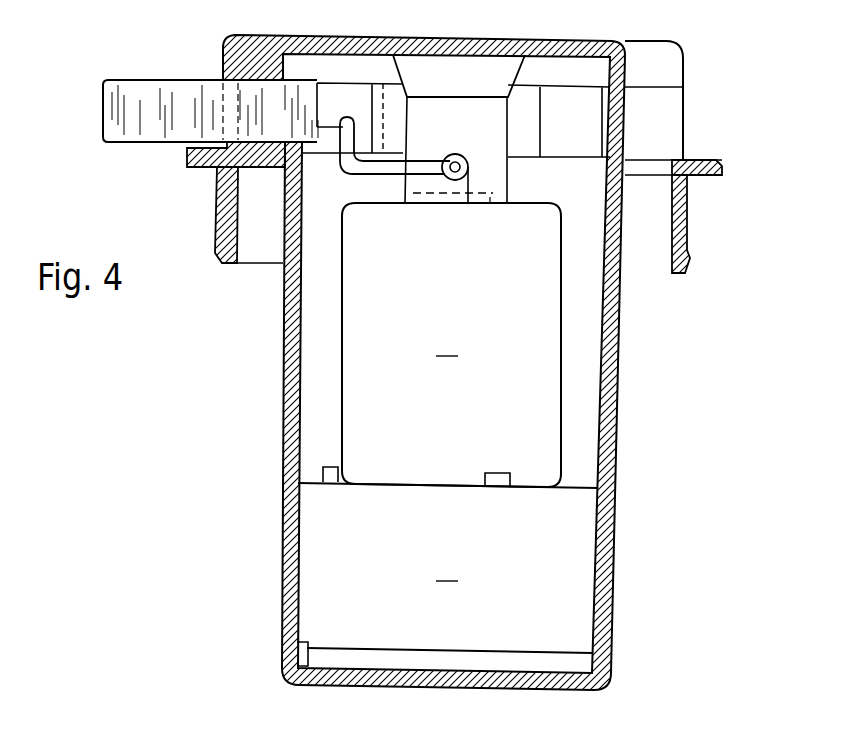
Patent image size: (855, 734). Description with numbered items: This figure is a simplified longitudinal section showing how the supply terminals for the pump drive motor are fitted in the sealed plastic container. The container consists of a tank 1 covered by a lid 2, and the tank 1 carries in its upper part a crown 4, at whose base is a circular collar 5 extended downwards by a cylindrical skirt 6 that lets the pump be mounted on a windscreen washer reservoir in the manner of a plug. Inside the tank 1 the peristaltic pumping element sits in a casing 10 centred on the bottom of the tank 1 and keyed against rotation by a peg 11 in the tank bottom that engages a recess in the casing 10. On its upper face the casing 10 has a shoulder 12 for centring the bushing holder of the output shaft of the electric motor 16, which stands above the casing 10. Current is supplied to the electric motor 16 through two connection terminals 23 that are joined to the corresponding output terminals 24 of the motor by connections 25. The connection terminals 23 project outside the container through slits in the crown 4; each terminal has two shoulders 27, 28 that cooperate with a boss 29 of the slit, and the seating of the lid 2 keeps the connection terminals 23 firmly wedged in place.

The tank 1 is at (290, 387).
The lid 2 is at (395, 43).
The crown 4 is at (685, 112).
The circular collar 5 is at (713, 162).
The cylindrical skirt 6 is at (687, 223).
The casing 10 is at (448, 568).
The peg 11 is at (300, 653).
The shoulder 12 is at (500, 480).
The electric motor 16 is at (451, 345).
The connection terminals 23 is at (170, 102).
The output terminals 24 is at (462, 182).
The connections 25 is at (415, 167).
The shoulder 27 is at (187, 160).
The shoulder 28 is at (288, 150).
The boss 29 is at (223, 183).